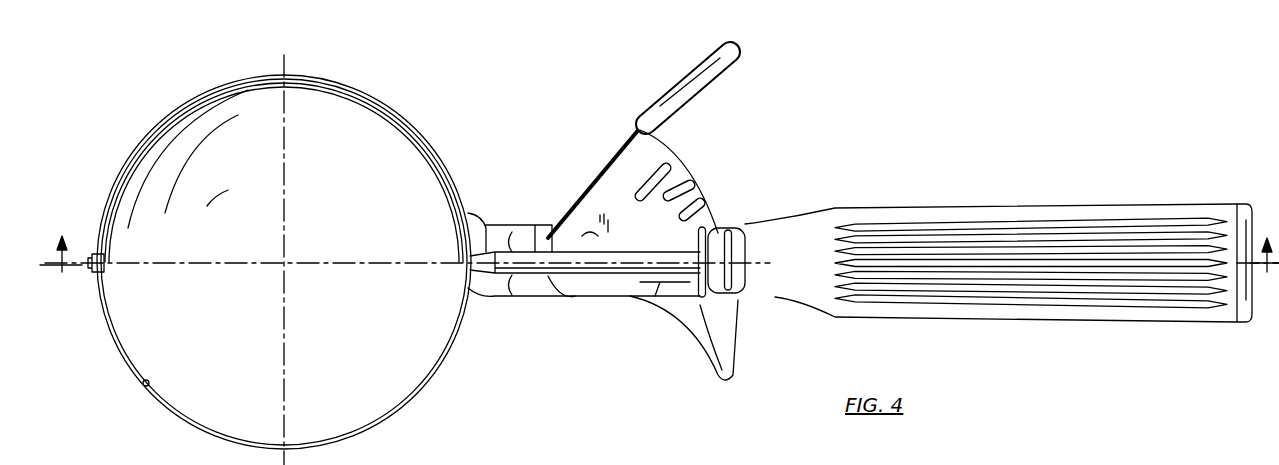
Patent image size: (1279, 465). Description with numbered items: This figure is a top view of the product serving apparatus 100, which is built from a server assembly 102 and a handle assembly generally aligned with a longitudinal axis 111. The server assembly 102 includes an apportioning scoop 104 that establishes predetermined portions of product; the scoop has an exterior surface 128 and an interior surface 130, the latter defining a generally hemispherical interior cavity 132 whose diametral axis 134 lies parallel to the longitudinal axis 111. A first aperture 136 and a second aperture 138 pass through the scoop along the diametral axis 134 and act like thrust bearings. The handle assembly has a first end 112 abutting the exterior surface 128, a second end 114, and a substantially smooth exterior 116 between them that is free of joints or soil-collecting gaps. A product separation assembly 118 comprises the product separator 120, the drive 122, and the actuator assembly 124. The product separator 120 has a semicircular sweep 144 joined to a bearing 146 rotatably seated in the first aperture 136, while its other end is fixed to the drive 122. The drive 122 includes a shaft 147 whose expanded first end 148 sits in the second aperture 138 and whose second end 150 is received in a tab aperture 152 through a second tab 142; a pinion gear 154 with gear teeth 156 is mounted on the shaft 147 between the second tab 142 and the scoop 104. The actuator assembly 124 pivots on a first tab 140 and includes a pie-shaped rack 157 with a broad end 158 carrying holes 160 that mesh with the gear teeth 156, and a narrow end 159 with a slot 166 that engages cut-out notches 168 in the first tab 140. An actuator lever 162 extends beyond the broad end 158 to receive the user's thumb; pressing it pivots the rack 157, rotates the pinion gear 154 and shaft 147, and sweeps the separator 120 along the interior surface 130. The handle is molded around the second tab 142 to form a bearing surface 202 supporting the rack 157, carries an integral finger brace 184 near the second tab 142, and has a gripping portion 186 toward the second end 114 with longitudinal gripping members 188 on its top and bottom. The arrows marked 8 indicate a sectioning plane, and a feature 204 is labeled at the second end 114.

The section line 8- 8 is at (659, 240).
The product serving apparatus 100 is at (940, 96).
The server assembly 102 is at (443, 372).
The apportioning scoop 104 is at (422, 396).
The longitudinal axis 111 is at (1178, 263).
The first end 112 is at (470, 212).
The second end 114 is at (1234, 322).
The smooth exterior 116 is at (962, 210).
The product separation assembly 118 is at (716, 170).
The product separator 120 is at (381, 116).
The drive 122 is at (625, 300).
The actuator assembly 124 is at (605, 150).
The exterior surface 128 is at (108, 335).
The interior surface 130 is at (140, 382).
The interior cavity 132 is at (188, 208).
The diametral axis 134 is at (330, 265).
The first aperture 136 is at (96, 270).
The second aperture 138 is at (468, 285).
The first tab 140 is at (570, 298).
The second tab 142 is at (732, 232).
The sweep 144 is at (340, 94).
The bearing 146 is at (93, 254).
The shaft 147 is at (597, 298).
The first end 148 is at (492, 228).
The second end 150 is at (770, 300).
The tab aperture 152 is at (758, 222).
The pinion gear 154 is at (698, 318).
The gear teeth 156 is at (730, 228).
The pie-shaped rack 157 is at (610, 166).
The broad end 158 is at (706, 152).
The narrow end 159 is at (553, 230).
The holes 160 is at (662, 214).
The actuator lever 162 is at (700, 72).
The slot 166 is at (526, 297).
The cut-out notches 168 is at (590, 248).
The finger brace 184 is at (735, 380).
The gripping portion 186 is at (1046, 322).
The longitudinal gripping members 188 is at (1060, 236).
The bearing surface 202 is at (670, 298).
The end cap 204 is at (1240, 204).